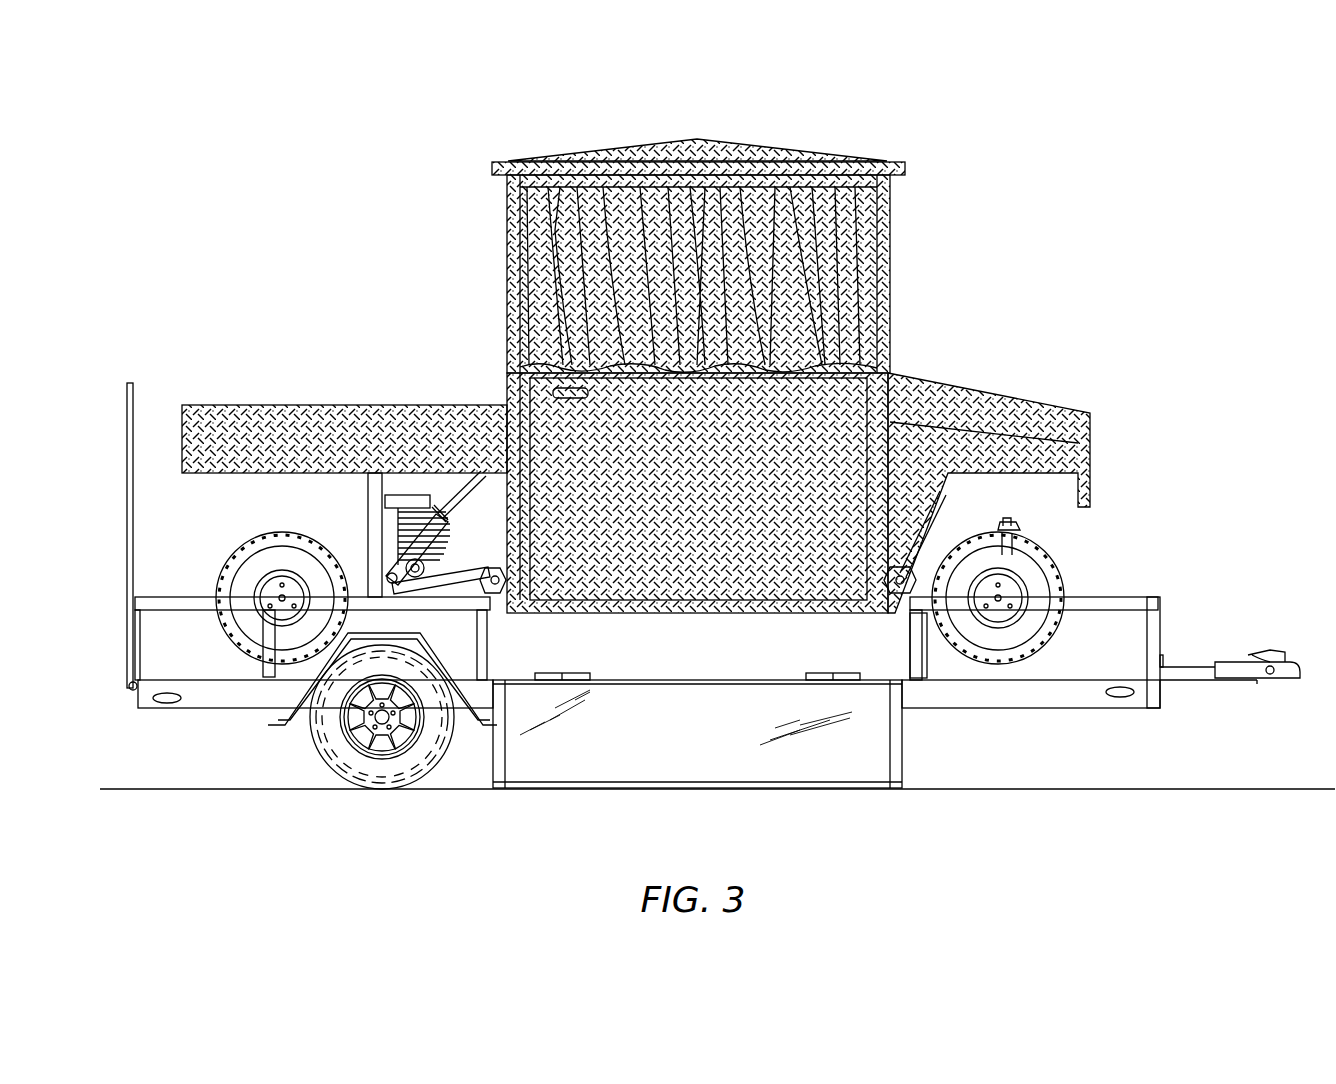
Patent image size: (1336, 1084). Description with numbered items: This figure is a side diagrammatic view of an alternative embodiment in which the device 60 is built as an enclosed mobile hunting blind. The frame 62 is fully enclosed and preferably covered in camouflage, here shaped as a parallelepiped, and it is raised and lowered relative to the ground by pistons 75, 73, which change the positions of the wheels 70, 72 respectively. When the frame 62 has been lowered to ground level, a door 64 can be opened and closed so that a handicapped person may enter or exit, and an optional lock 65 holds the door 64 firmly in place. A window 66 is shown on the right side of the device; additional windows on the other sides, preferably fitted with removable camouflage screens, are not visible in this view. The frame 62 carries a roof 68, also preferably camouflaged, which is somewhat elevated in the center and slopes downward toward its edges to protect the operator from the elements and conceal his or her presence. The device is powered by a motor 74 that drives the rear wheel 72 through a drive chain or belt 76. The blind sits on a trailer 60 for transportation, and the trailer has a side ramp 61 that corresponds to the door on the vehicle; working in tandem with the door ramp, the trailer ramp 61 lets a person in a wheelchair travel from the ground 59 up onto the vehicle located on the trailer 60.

The ground 59 is at (1000, 790).
The trailer 60 is at (168, 832).
The side ramp 61 is at (605, 727).
The frame 62 is at (888, 395).
The door 64 is at (720, 577).
The lock 65 is at (560, 392).
The window 66 is at (845, 235).
The roof 68 is at (833, 153).
The wheel 70 is at (1035, 583).
The rear wheel 72 is at (262, 565).
The piston 73 is at (445, 500).
The motor 74 is at (407, 497).
The piston 75 is at (950, 488).
The drive chain or belt 76 is at (345, 560).